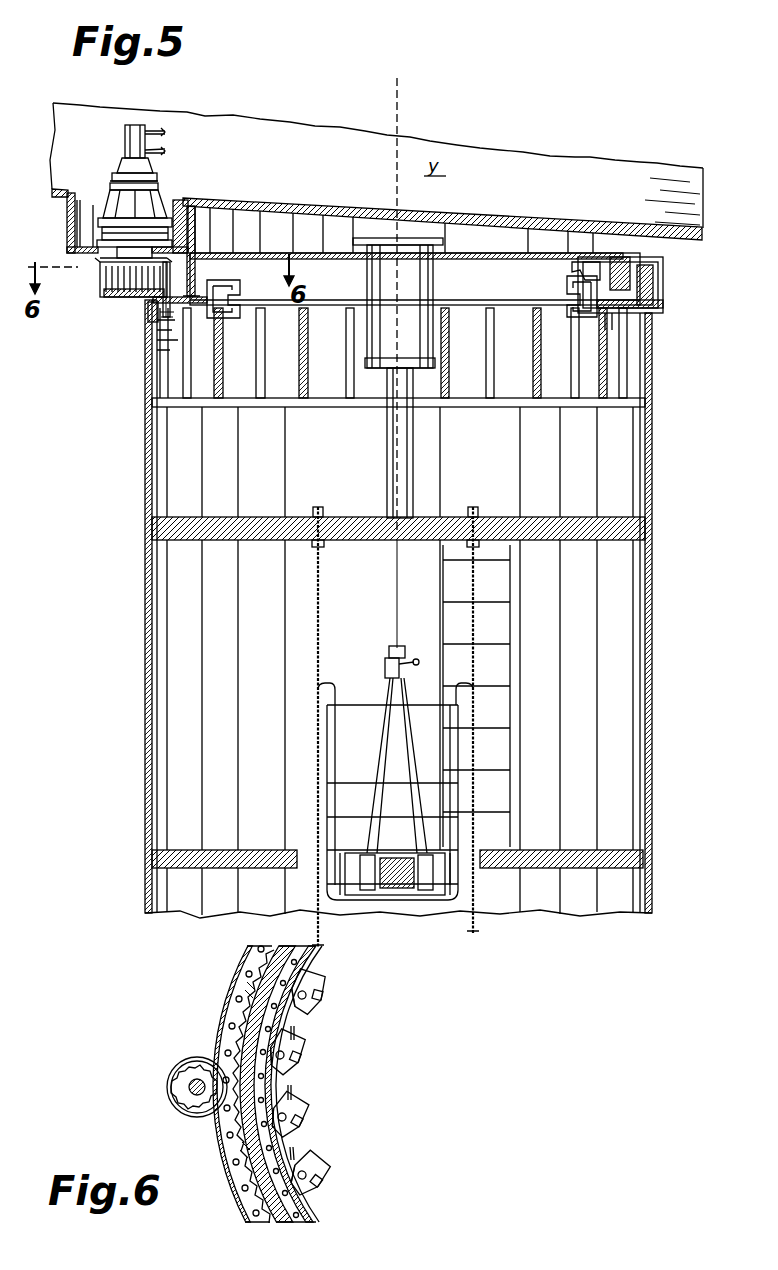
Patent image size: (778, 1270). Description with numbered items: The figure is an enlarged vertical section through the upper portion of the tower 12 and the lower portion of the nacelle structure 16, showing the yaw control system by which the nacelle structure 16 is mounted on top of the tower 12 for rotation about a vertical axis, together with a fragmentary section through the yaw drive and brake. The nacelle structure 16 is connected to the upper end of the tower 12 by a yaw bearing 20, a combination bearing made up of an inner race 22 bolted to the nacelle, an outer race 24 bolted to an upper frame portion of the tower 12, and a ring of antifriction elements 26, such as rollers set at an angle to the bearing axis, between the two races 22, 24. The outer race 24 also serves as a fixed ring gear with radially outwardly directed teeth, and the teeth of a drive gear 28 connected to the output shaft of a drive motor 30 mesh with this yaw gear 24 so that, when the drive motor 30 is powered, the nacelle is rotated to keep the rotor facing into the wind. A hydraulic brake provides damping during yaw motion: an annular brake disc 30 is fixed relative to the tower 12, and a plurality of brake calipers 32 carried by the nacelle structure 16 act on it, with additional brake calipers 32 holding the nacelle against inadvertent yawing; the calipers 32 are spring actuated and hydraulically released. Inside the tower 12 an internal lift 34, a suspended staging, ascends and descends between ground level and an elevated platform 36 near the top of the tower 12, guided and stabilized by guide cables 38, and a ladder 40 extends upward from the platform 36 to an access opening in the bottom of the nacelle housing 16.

In FIG. 5, the tower 12 is at (148, 632).
In FIG. 5, the nacelle structure 16 is at (328, 212).
In FIG. 5, the yaw bearing 20 is at (200, 250).
In FIG. 5, the inner race 22 is at (600, 245).
In FIG. 6, the inner race 22 is at (262, 1082).
In FIG. 5, the outer race 24 is at (160, 300).
In FIG. 6, the outer race 24 is at (214, 1052).
In FIG. 5, the ring of antifriction elements 26 is at (185, 245).
In FIG. 5, the drive gear 28 is at (110, 280).
In FIG. 6, the drive gear 28 is at (167, 1070).
In FIG. 5, the drive motor 30 is at (150, 215).
In FIG. 6, the drive motor 30 is at (312, 960).
In FIG. 5, the brake calipers 32 is at (240, 300).
In FIG. 6, the brake calipers 32 is at (310, 1015).
In FIG. 5, the internal lift 34 is at (345, 828).
In FIG. 5, the elevated platform 36 is at (230, 850).
In FIG. 5, the guide cables 38 is at (318, 617).
In FIG. 5, the ladder 40 is at (512, 661).